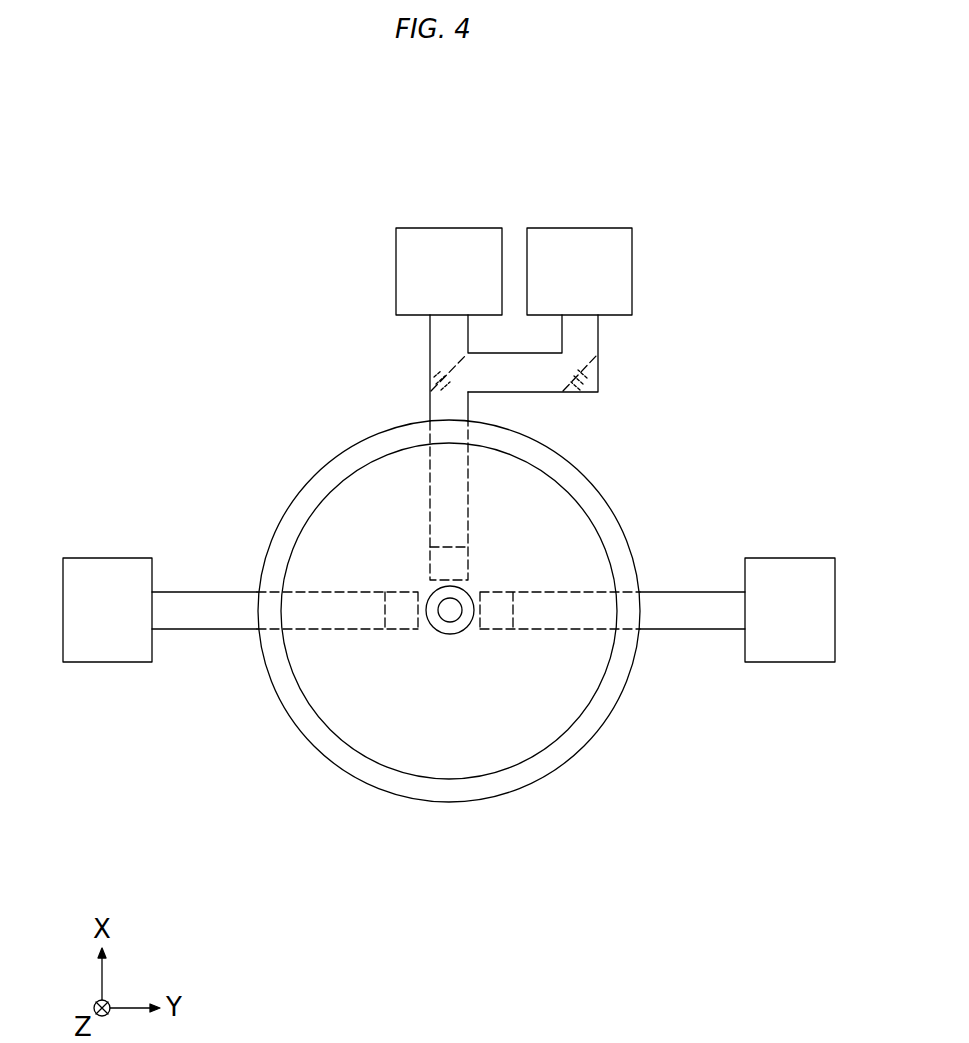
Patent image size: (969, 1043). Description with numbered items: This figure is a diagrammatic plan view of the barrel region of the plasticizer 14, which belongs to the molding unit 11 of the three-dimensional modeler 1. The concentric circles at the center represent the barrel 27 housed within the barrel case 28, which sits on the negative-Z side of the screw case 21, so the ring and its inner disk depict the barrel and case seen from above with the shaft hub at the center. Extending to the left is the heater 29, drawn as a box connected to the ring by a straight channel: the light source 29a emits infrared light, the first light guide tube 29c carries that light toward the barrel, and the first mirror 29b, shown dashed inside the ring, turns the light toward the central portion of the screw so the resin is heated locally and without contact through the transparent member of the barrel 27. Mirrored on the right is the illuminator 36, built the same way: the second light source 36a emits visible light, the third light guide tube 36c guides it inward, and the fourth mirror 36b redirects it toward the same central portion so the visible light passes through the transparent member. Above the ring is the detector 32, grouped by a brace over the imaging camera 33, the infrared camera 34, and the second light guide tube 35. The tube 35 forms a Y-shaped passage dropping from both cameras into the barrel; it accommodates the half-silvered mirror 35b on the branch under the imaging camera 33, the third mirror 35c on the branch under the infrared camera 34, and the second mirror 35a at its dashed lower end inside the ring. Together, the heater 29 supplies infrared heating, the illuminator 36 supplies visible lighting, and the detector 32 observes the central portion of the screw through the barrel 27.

The three-dimensional modeler 1 is at (827, 101).
The molding unit 11 is at (796, 101).
The plasticizer 14 is at (697, 140).
The screw case 21 is at (410, 790).
The barrel 27 is at (449, 660).
The barrel case 28 is at (473, 743).
The heater 29 is at (285, 797).
The light source 29a is at (107, 652).
The first mirror 29b is at (392, 631).
The first light guide tube 29c is at (195, 617).
The detector 32 is at (608, 152).
The imaging camera 33 is at (451, 237).
The infrared camera 34 is at (586, 237).
The second light guide tube 35 is at (516, 373).
The second mirror 35a is at (455, 553).
The half-silvered mirror 35b is at (445, 360).
The third mirror 35c is at (600, 372).
The illuminator 36 is at (818, 797).
The second light source 36a is at (792, 650).
The fourth mirror 36b is at (503, 624).
The third light guide tube 36c is at (715, 622).